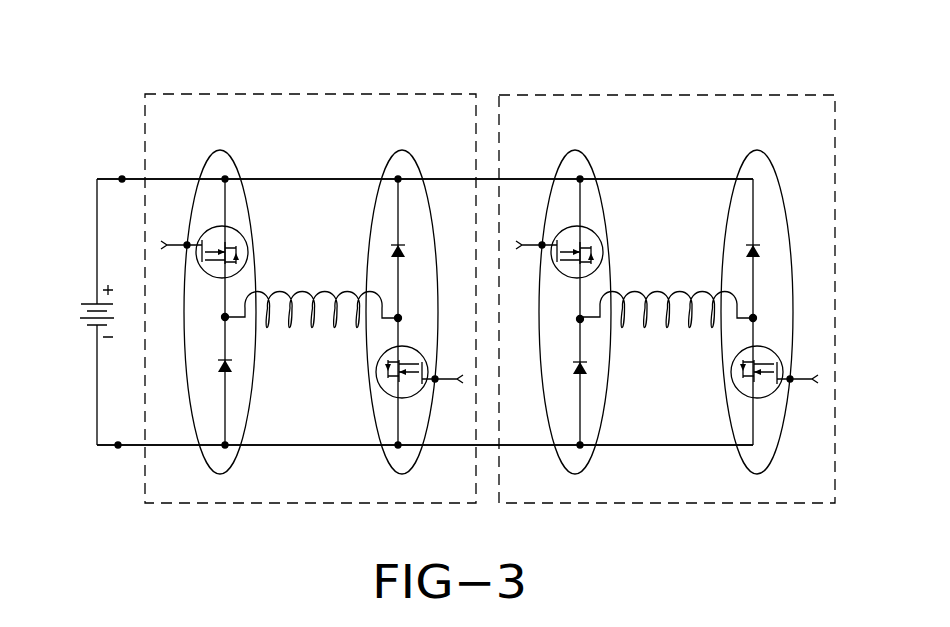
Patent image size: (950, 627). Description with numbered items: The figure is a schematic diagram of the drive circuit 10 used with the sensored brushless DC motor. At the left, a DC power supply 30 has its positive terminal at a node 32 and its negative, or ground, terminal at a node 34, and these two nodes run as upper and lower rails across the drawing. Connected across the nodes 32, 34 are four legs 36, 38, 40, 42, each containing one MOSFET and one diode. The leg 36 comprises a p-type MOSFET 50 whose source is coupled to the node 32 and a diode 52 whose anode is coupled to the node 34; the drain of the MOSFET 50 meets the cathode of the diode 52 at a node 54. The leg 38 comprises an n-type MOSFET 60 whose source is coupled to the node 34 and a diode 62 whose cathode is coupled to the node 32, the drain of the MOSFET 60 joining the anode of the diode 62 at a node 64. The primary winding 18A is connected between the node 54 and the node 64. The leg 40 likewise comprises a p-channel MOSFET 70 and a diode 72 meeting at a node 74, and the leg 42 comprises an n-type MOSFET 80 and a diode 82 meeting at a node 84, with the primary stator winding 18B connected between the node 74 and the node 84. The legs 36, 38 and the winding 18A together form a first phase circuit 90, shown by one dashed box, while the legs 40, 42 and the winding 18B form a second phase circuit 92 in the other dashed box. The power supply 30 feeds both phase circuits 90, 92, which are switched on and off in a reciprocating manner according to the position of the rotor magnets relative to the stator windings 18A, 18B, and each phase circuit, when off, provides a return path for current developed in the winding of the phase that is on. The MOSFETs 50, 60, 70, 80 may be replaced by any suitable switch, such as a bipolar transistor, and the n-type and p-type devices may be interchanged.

The drive circuit 10 is at (92, 106).
The first phase circuit 90 is at (200, 94).
The second phase circuit 92 is at (780, 95).
The node 32 is at (122, 179).
The node 34 is at (118, 445).
The DC power supply 30 is at (86, 304).
The leg 36 is at (207, 472).
The leg 38 is at (406, 471).
The leg 40 is at (562, 472).
The leg 42 is at (766, 471).
The p-type MOSFET 50 is at (240, 232).
The diode 52 is at (231, 366).
The node 54 is at (225, 317).
The n-type MOSFET 60 is at (379, 379).
The diode 62 is at (392, 251).
The node 64 is at (400, 318).
The p-channel MOSFET 70 is at (595, 232).
The diode 72 is at (586, 368).
The node 74 is at (580, 319).
The n-type MOSFET 80 is at (734, 379).
The diode 82 is at (747, 251).
The node 84 is at (755, 318).
The primary winding 18A is at (301, 293).
The primary stator winding 18B is at (656, 293).